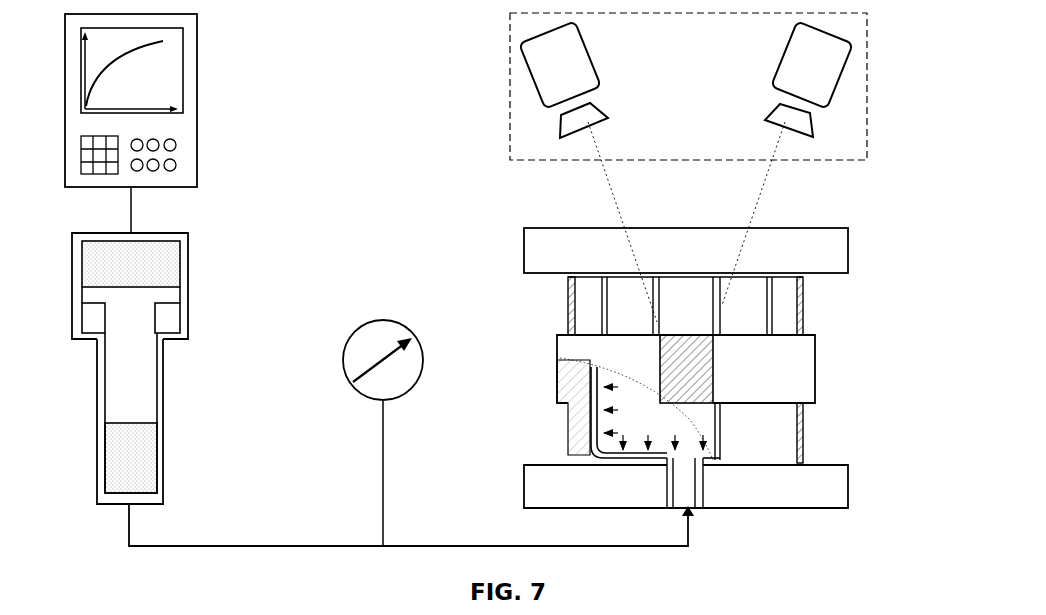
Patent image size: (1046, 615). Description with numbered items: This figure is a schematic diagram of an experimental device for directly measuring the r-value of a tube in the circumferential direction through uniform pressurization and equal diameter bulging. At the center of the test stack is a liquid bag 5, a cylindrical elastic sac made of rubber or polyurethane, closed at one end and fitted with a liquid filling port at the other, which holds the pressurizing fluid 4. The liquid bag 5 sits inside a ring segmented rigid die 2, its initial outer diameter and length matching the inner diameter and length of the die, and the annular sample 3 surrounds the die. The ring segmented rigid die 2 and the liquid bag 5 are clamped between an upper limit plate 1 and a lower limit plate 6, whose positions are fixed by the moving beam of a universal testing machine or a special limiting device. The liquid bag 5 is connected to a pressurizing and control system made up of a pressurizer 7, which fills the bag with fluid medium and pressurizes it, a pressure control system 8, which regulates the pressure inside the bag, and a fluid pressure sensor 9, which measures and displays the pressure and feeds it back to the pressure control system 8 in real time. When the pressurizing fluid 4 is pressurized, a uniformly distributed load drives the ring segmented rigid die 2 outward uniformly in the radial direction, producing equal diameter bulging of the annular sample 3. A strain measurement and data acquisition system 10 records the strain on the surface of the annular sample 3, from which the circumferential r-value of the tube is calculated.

The upper limit plate 1 is at (734, 245).
The ring segmented rigid die 2 is at (756, 362).
The annular sample 3 is at (751, 383).
The pressurizing fluid 4 is at (751, 406).
The liquid bag 5 is at (768, 412).
The lower limit plate 6 is at (734, 481).
The pressurizer 7 is at (145, 377).
The pressure control system 8 is at (199, 91).
The fluid pressure sensor 9 is at (423, 353).
The strain measurement and data acquisition system 10 is at (866, 90).